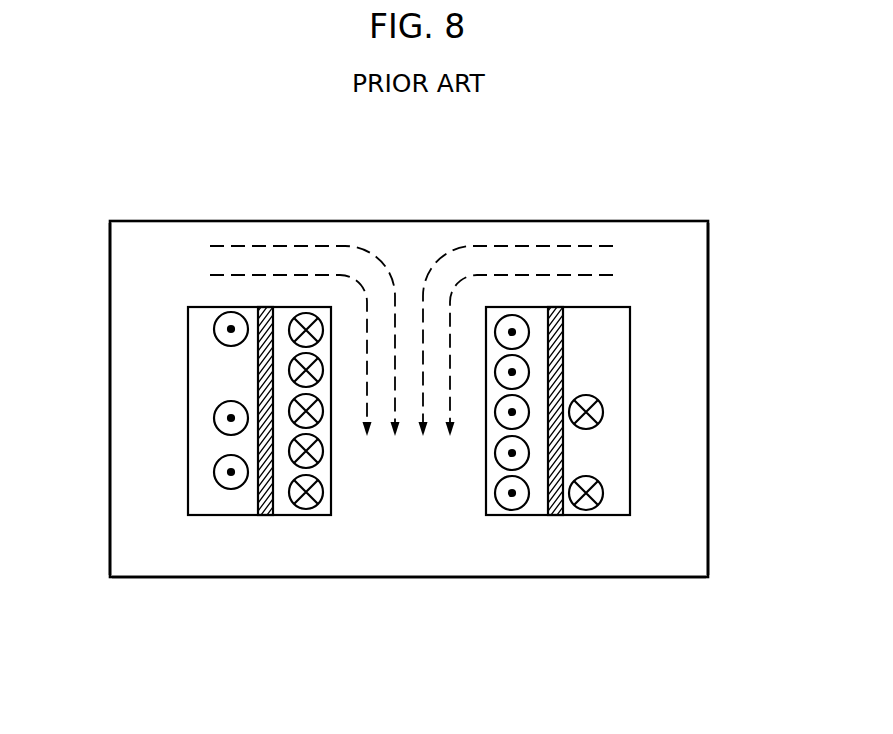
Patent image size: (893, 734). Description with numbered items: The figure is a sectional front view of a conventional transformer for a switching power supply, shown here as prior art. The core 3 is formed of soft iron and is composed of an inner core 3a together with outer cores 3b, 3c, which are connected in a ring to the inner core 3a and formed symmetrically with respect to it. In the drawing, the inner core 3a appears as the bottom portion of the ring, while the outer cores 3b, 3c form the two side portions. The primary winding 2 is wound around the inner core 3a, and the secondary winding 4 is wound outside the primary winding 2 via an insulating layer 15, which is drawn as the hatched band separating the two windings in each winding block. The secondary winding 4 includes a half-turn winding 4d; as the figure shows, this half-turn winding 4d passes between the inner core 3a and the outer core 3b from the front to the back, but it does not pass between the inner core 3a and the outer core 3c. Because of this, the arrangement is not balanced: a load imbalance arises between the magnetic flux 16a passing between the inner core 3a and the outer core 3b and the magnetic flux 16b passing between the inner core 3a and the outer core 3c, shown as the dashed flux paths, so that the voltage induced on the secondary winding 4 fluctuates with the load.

The primary winding 2 is at (365, 404).
The core 3 is at (695, 342).
The inner core 3a is at (412, 492).
The outer core 3b is at (127, 375).
The outer core 3c is at (695, 492).
The secondary winding 4 is at (197, 408).
The 0.5-turn winding 4d is at (218, 338).
The insulating layer 15 is at (263, 515).
The magnetic flux 16a is at (236, 257).
The magnetic flux 16b is at (556, 253).